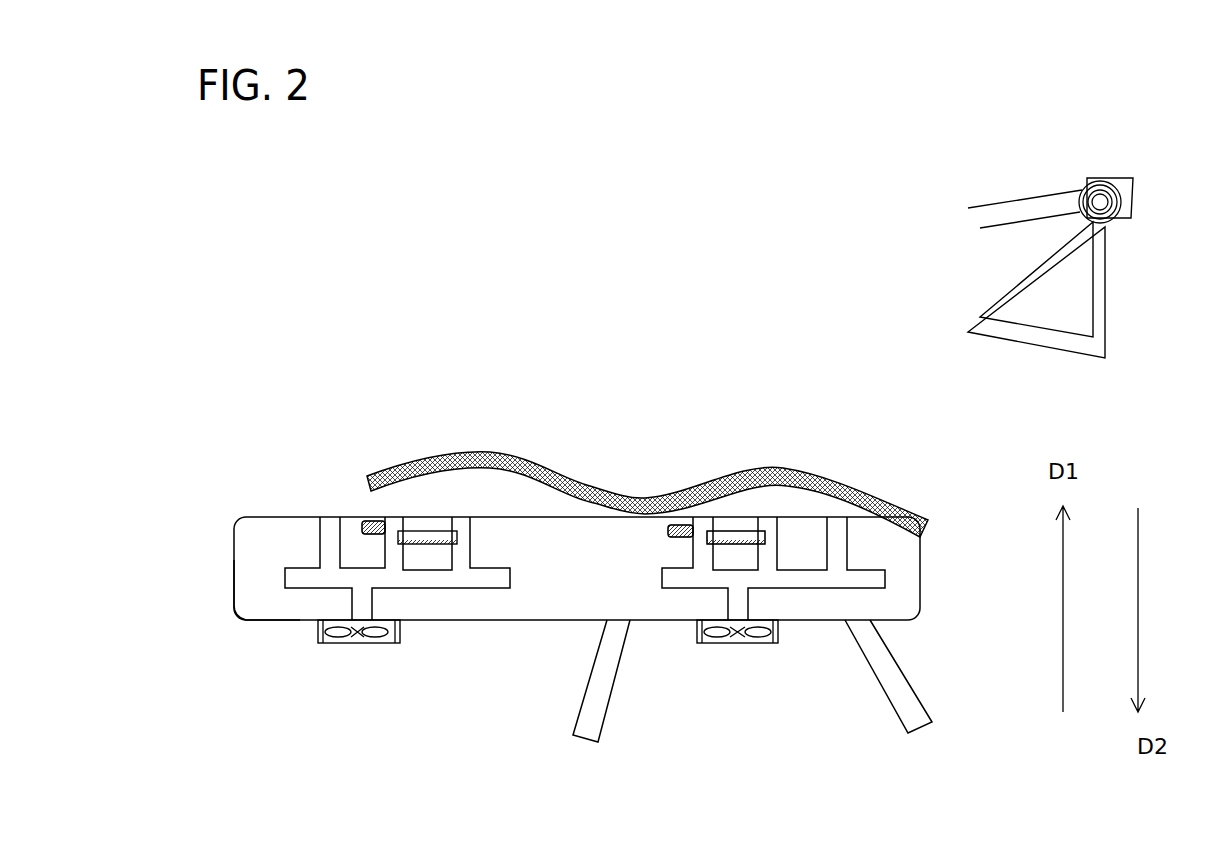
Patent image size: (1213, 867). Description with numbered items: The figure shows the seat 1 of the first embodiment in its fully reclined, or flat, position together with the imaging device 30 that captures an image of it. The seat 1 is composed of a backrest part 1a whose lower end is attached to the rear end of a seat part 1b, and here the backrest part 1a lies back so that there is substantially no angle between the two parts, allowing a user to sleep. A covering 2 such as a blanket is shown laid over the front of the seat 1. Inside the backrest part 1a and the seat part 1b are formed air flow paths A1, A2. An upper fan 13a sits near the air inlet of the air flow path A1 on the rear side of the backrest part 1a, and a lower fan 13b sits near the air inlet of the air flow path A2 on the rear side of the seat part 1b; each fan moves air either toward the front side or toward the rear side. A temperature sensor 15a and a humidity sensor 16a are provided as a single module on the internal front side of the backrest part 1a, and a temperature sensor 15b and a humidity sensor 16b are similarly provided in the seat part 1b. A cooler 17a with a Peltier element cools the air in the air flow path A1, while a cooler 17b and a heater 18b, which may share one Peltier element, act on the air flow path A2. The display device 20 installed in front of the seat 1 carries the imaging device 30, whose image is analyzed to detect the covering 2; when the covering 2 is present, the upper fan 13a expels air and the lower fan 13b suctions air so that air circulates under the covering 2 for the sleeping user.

The seat 1 is at (267, 508).
The backrest part 1a is at (252, 603).
The seat part 1b is at (813, 620).
The covering 2 is at (592, 494).
The upper fan 13a is at (337, 643).
The lower fan 13b is at (725, 643).
The temperature sensor 15a is at (367, 527).
The humidity sensor 16a is at (373, 527).
The temperature sensor 15b is at (683, 537).
The humidity sensor 16b is at (680, 531).
The cooler 17a is at (430, 542).
The cooler 17b is at (745, 541).
The heater 18b is at (736, 537).
The display device 20 is at (1113, 302).
The imaging device 30 is at (1135, 198).
The air flow path A1 is at (435, 592).
The air flow path A2 is at (897, 595).